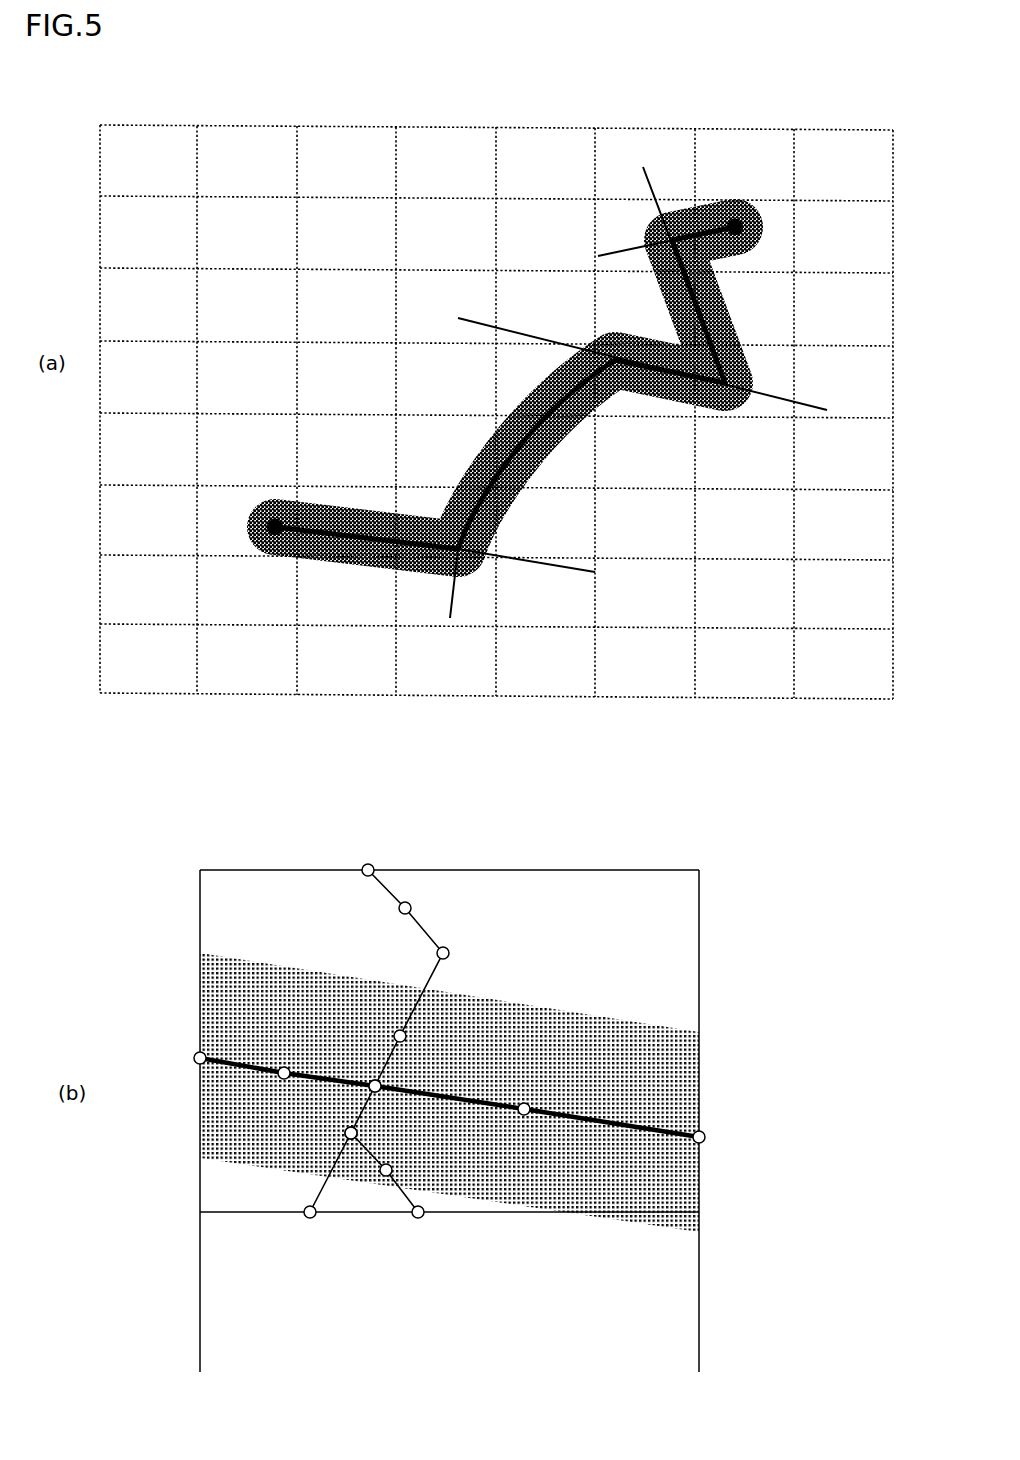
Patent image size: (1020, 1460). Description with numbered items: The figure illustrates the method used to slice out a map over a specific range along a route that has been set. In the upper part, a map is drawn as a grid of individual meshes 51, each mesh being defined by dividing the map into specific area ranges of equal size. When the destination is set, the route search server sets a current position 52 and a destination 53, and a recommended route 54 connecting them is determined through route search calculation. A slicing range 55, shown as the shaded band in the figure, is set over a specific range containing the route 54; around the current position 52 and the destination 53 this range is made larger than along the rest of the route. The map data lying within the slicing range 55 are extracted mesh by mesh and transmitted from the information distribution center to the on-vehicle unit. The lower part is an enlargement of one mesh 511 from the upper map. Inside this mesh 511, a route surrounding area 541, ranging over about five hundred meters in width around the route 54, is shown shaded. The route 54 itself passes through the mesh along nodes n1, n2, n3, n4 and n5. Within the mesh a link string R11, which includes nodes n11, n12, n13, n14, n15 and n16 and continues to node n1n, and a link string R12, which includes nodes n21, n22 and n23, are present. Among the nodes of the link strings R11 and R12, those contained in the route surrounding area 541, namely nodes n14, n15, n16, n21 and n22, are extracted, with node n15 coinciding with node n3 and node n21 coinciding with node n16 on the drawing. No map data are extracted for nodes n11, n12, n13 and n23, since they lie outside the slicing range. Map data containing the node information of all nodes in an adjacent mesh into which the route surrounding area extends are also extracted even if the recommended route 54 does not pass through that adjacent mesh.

The mesh 51 is at (150, 135).
The mesh 511 is at (330, 558).
The current position 52 is at (263, 536).
The destination 53 is at (742, 247).
The recommended route 54 is at (388, 560).
The route surrounding area 541 is at (232, 999).
The slicing range 55 is at (333, 518).
The link string R11 is at (390, 890).
The link string R12 is at (368, 1153).
The node n1 is at (218, 1048).
The node n2 is at (296, 1058).
The node n3 is at (393, 1077).
The node n4 is at (540, 1096).
The node n5 is at (681, 1122).
The node n11 is at (391, 857).
The node n12 is at (442, 902).
The node n13 is at (481, 950).
The node n14 is at (433, 1035).
The node n15 is at (453, 1077).
The node n16 is at (389, 1130).
The node n21 is at (441, 1130).
The node n22 is at (421, 1167).
The node n23 is at (429, 1224).
The node n1n is at (309, 1224).